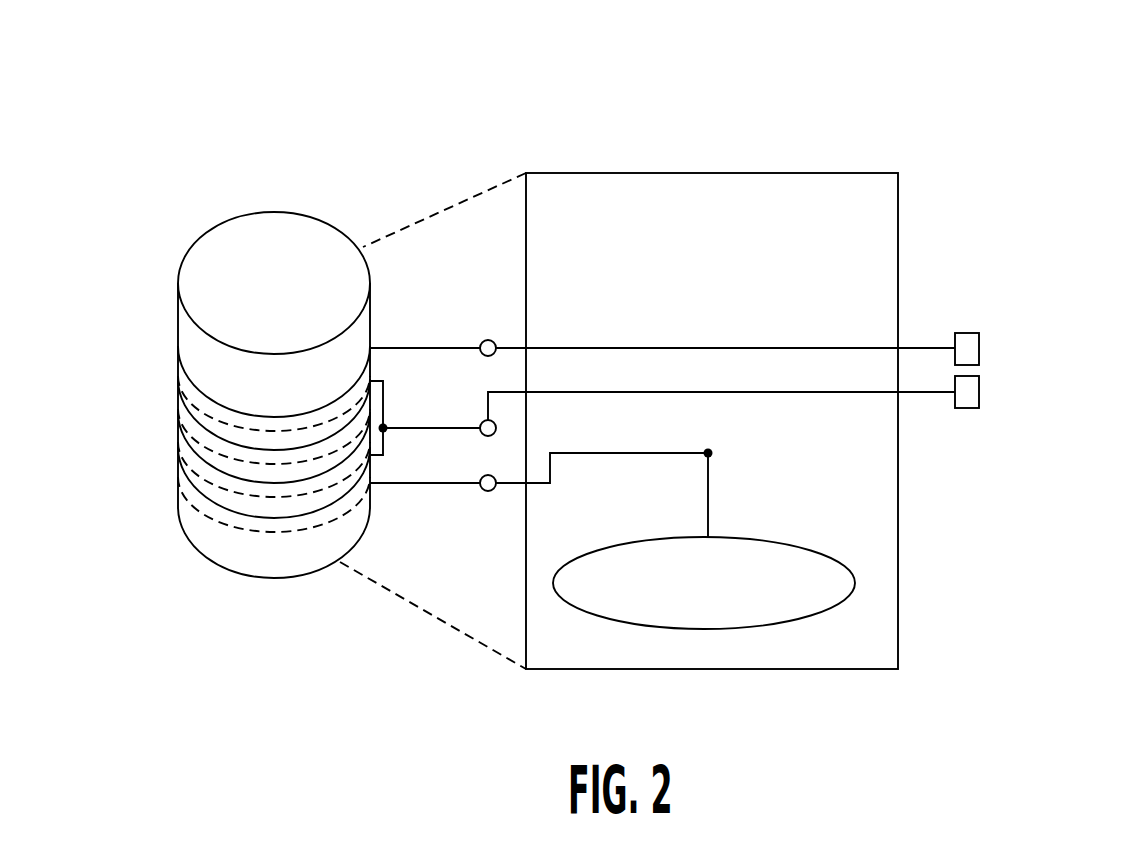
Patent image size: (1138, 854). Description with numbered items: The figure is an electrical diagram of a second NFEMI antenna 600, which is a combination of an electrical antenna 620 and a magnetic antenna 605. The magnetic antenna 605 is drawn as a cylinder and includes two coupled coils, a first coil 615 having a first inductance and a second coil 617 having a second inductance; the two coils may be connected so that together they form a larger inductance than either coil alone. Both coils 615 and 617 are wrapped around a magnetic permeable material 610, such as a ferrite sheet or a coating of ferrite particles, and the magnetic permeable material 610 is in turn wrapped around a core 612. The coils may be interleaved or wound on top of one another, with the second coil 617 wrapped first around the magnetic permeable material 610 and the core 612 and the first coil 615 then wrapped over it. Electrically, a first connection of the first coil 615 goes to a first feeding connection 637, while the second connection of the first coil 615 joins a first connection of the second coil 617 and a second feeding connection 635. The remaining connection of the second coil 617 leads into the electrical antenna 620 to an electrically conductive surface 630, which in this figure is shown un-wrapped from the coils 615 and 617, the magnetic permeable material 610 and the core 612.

The NFEMI antenna 600 is at (301, 110).
The magnetic antenna 605 is at (160, 185).
The magnetic permeable material 610 is at (200, 240).
The core 612 is at (268, 287).
The first coil 615 is at (207, 394).
The second coil 617 is at (217, 505).
The electrical antenna 620 is at (640, 173).
The electrically conductive surface 630 is at (855, 580).
The second feeding connection 635 is at (979, 392).
The first feeding connection 637 is at (979, 348).